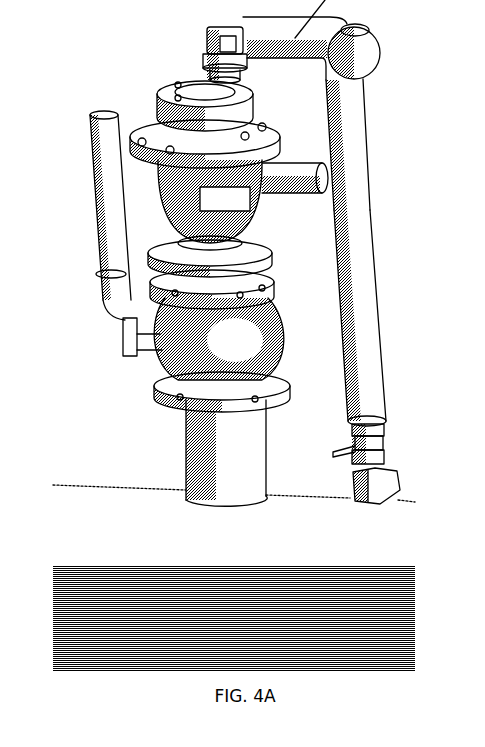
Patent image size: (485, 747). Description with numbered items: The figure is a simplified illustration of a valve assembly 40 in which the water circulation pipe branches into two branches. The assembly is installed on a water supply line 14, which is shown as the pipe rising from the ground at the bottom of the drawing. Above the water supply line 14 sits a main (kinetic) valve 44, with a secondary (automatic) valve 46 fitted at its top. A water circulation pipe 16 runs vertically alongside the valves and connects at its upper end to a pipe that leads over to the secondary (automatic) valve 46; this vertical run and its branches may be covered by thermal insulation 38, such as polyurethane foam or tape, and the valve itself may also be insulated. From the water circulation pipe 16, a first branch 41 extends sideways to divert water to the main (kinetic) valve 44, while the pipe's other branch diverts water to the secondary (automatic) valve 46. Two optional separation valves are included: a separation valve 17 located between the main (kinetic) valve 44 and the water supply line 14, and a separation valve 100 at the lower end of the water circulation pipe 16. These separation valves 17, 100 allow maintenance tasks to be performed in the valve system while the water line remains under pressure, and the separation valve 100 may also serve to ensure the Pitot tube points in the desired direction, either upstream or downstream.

The valve assembly 40 is at (160, 242).
The secondary (automatic) valve 46 is at (210, 58).
The thermal insulation 38 is at (348, 118).
The water circulation pipe 16 is at (358, 315).
The first branch 41 is at (292, 194).
The main (kinetic) valve 44 is at (160, 221).
The separation valve 17 is at (180, 343).
The water supply line 14 is at (110, 522).
The separation valve 100 is at (375, 447).